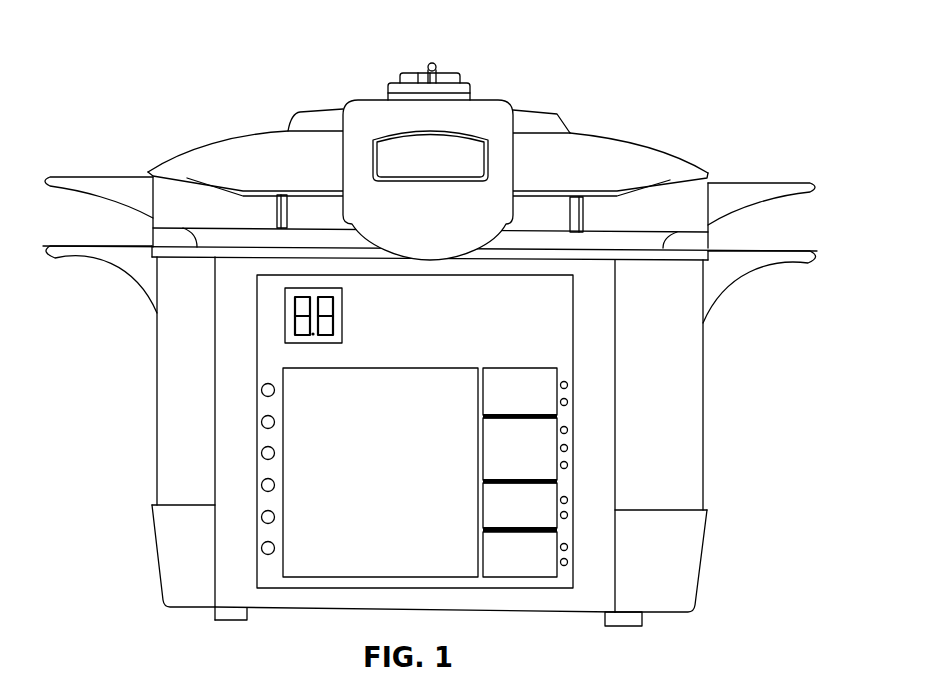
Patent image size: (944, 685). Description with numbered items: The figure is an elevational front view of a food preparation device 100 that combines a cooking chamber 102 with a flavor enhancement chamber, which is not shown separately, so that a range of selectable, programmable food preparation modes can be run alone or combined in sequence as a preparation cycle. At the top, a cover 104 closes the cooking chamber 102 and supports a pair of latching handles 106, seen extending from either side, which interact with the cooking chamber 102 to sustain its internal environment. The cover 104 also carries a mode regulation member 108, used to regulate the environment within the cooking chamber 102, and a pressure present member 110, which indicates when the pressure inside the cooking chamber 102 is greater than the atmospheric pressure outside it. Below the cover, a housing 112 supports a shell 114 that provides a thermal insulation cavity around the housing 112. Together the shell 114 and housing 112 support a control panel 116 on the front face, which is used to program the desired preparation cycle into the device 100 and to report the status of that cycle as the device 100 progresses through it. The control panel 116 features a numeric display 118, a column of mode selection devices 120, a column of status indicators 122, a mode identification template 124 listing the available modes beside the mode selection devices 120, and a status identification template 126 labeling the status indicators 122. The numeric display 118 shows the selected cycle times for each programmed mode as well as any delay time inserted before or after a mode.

The food preparation device 100 is at (288, 38).
The cooking chamber 102 is at (653, 243).
The cover 104 is at (610, 135).
The latching handles 106 is at (110, 177).
The mode regulation member 108 is at (468, 84).
The pressure present member 110 is at (443, 58).
The housing 112 is at (187, 252).
The shell 114 is at (702, 422).
The control panel 116 is at (448, 583).
The numeric display 118 is at (333, 340).
The mode selection devices 120 is at (267, 575).
The status indicators 122 is at (563, 360).
The mode identification template 124 is at (382, 376).
The status identification template 126 is at (542, 369).